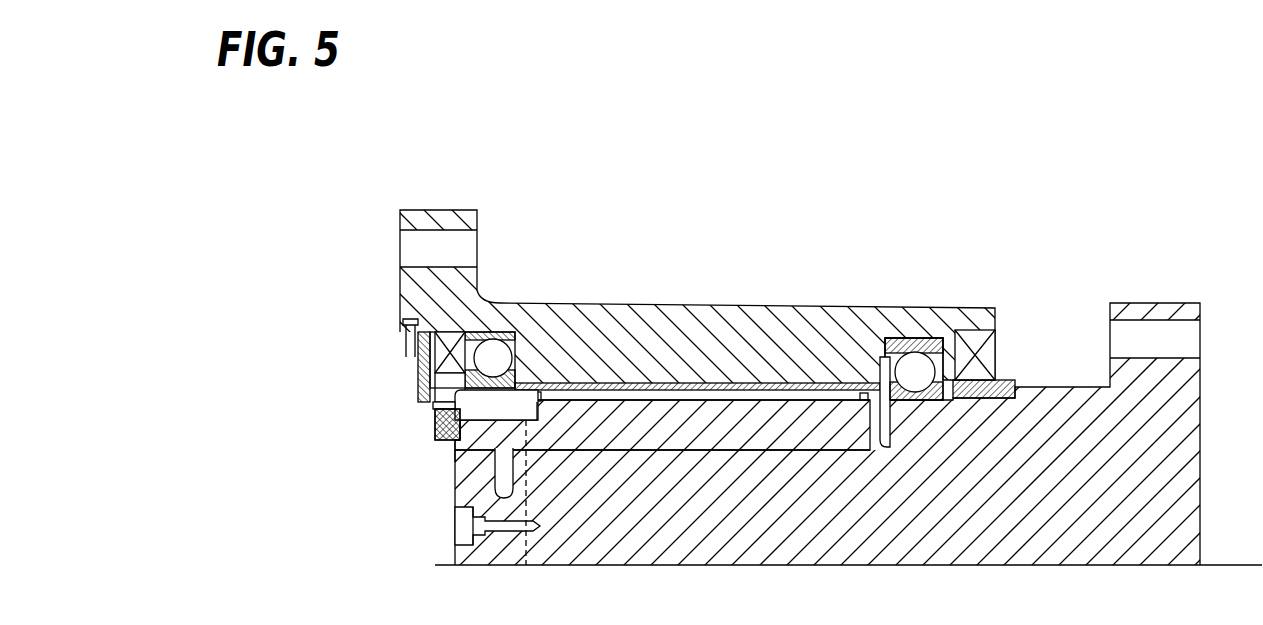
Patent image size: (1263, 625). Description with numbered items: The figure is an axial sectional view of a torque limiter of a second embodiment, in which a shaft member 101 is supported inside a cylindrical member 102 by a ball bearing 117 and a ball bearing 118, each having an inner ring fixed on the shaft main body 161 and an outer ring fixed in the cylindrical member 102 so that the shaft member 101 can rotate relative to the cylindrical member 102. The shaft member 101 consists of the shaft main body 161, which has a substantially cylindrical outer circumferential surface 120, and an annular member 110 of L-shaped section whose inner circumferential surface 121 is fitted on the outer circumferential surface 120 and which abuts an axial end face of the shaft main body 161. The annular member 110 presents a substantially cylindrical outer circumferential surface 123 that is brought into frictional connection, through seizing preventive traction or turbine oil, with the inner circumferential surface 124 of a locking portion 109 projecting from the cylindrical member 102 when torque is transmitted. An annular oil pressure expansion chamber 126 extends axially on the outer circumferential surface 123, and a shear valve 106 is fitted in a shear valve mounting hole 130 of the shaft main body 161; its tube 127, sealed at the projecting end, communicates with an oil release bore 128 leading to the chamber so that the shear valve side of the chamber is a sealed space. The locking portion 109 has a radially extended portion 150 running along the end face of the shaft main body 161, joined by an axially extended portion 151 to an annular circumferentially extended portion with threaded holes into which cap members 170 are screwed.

The shaft member 101 is at (735, 477).
The cylindrical member 102 is at (573, 318).
The shear valve 106 is at (455, 452).
The locking portion 109 is at (418, 368).
The annular member 110 is at (808, 455).
The ball bearing 117 is at (914, 331).
The ball bearing 118 is at (487, 322).
The outer circumferential surface 120 is at (697, 400).
The inner circumferential surface 121 is at (810, 470).
The outer circumferential surface 123 is at (845, 352).
The inner circumferential surface 124 is at (590, 383).
The oil pressure expansion chamber 126 is at (662, 388).
The tube 127 is at (438, 455).
The oil release bore 128 is at (520, 427).
The shear valve mounting hole 130 is at (451, 504).
The radially extended portion 150 is at (418, 386).
The axially extended portion 151 is at (432, 407).
The shaft main body 161 is at (690, 510).
The cap member 170 is at (435, 430).